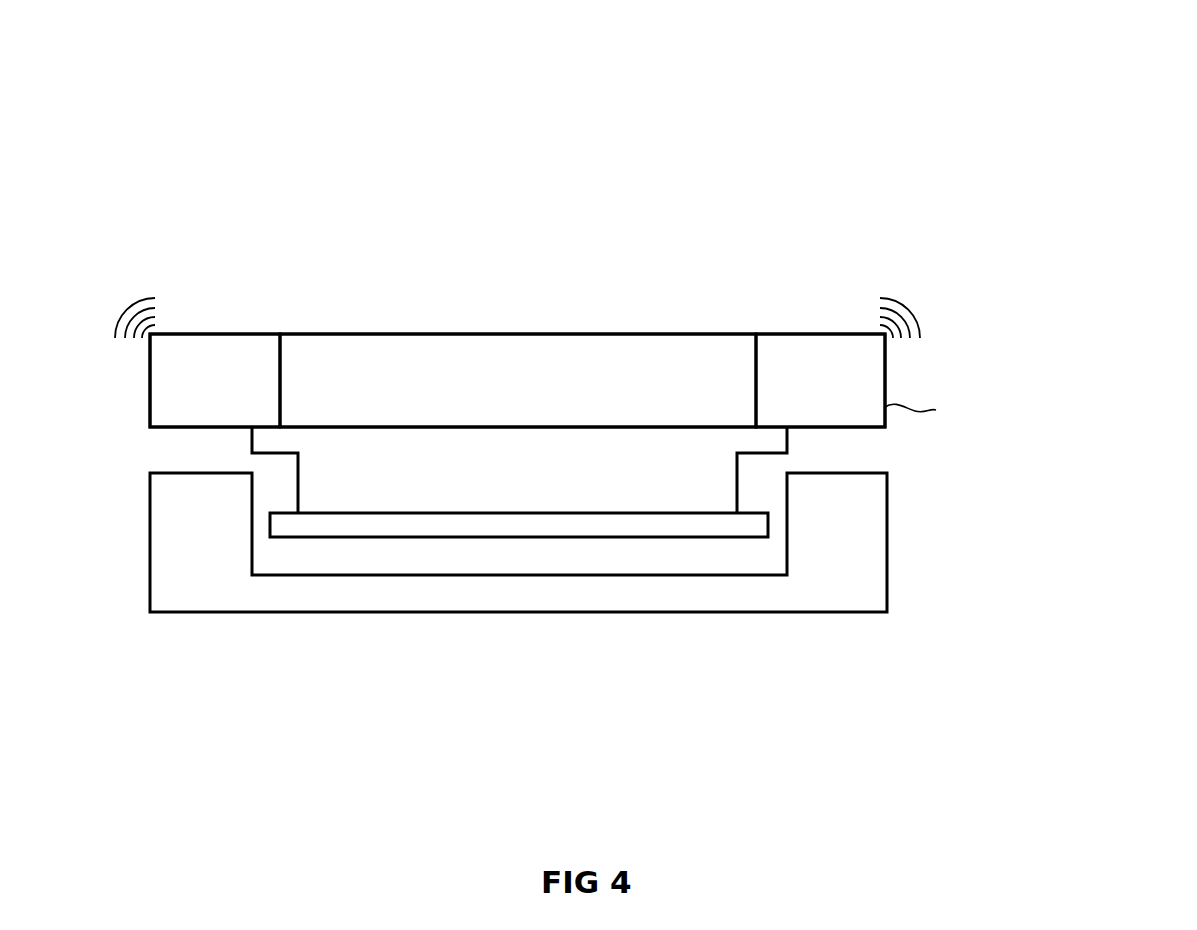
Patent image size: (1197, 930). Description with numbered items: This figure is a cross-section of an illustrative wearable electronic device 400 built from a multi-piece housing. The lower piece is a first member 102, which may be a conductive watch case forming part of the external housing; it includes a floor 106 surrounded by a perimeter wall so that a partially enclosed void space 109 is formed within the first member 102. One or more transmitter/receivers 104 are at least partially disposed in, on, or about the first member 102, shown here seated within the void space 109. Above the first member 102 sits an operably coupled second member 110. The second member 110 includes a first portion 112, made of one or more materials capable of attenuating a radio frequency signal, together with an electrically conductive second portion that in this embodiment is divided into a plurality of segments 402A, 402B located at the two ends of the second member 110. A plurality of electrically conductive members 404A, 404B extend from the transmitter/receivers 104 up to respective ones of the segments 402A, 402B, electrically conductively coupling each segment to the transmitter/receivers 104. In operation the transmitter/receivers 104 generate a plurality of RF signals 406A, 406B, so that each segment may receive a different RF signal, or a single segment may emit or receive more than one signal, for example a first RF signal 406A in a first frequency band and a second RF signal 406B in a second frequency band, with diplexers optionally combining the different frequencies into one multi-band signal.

The wearable electronic device 400 is at (1078, 82).
The second member 110 is at (542, 332).
The first portion 112 is at (436, 348).
The segment 402A is at (885, 376).
The segment 402B is at (160, 380).
The first RF signal 406A is at (892, 296).
The second RF signal 406B is at (134, 304).
The electrically conductive member 404A is at (736, 471).
The electrically conductive member 404B is at (299, 470).
The void space 109 is at (536, 481).
The transmitter/receiver 104 is at (519, 525).
The first member 102 is at (421, 613).
The floor 106 is at (675, 600).